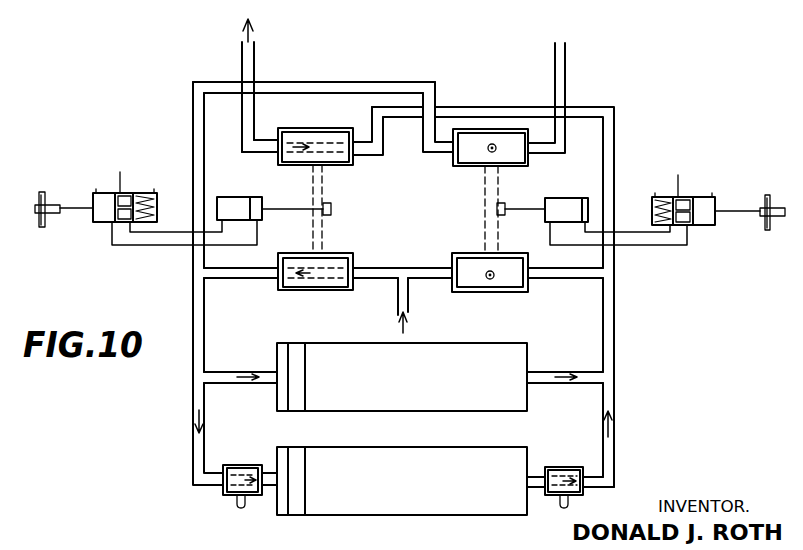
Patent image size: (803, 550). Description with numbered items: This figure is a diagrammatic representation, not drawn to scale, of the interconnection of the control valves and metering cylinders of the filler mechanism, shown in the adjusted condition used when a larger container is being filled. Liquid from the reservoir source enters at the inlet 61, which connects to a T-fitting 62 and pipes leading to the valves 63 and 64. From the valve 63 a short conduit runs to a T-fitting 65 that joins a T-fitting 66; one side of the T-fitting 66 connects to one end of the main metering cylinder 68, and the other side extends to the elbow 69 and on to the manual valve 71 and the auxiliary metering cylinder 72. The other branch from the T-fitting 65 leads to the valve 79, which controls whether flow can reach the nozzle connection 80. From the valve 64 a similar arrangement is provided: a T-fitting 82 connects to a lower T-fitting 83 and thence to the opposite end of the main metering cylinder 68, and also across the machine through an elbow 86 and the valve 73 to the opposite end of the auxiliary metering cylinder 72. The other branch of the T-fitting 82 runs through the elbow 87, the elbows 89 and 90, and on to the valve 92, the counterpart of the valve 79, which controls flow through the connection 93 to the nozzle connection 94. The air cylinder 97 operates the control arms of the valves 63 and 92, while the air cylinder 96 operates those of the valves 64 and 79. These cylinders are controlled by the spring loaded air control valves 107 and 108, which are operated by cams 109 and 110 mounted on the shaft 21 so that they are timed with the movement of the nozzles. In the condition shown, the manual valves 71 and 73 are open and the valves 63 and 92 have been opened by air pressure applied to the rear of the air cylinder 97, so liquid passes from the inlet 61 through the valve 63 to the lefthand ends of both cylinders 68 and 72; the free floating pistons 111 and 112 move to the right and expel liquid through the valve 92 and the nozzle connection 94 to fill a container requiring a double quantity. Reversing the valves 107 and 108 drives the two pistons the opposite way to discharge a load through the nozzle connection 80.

The shaft 21 is at (38, 226).
The inlet 61 is at (408, 305).
The T-fitting 62 is at (405, 268).
The valve 63 is at (320, 290).
The valve 64 is at (487, 292).
The T-fitting 65 is at (193, 273).
The T-fitting 66 is at (193, 373).
The main metering cylinder 68 is at (390, 411).
The elbow 69 is at (193, 485).
The manual valve 71 is at (228, 496).
The auxiliary metering cylinder 72 is at (378, 515).
The valve 73 is at (552, 468).
The valve 79 is at (467, 167).
The nozzle connection 80 is at (567, 60).
The T-fitting 82 is at (615, 270).
The T-fitting 83 is at (614, 378).
The elbow 86 is at (614, 490).
The elbow 87 is at (615, 108).
The elbow 89 is at (372, 108).
The elbow 90 is at (383, 154).
The valve 92 is at (318, 128).
The conduit to exhaust 93 is at (255, 138).
The nozzle connection 94 is at (255, 56).
The air cylinder 96 is at (567, 198).
The air cylinder 97 is at (250, 181).
The air control valve 107 is at (143, 193).
The air control valve 108 is at (700, 197).
The cam 109 is at (55, 213).
The cam 110 is at (772, 208).
The piston 111 is at (305, 375).
The piston 112 is at (305, 483).